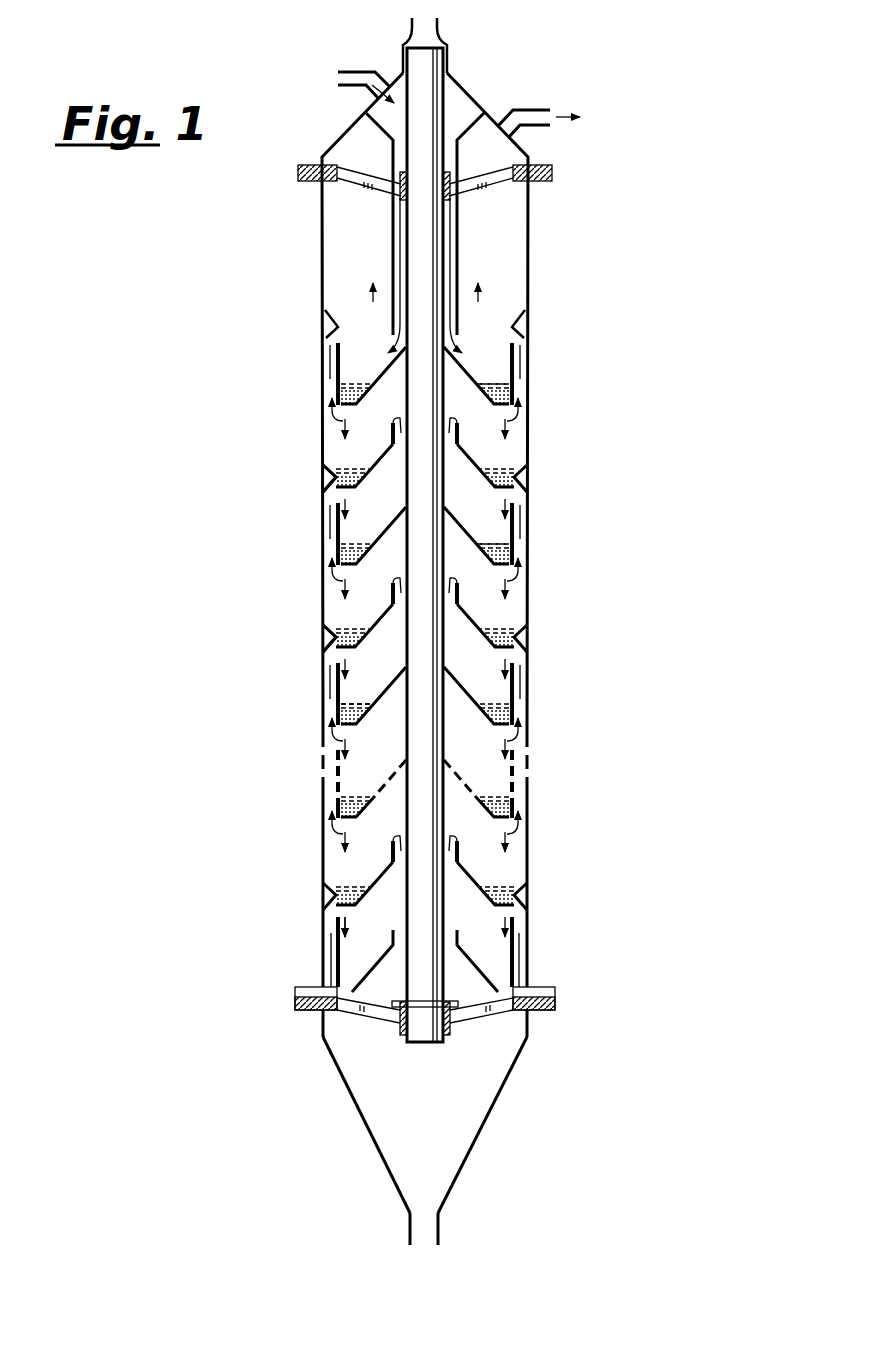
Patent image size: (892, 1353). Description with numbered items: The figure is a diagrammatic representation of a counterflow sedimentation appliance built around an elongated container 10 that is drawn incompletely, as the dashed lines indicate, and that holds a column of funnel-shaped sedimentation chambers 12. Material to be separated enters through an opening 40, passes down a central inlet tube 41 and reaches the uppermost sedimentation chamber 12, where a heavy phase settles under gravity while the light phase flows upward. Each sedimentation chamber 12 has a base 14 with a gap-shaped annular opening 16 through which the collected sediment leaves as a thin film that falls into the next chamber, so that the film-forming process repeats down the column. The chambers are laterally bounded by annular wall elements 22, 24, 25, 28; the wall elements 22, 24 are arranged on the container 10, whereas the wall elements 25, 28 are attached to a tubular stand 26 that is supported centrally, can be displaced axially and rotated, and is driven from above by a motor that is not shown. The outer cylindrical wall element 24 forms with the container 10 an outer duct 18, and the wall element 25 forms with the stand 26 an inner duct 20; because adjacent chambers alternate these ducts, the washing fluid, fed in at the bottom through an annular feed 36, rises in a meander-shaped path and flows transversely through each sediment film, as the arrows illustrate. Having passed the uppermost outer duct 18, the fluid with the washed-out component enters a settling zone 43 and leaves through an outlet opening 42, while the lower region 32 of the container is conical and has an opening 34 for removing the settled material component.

The elongated container 10 is at (627, 317).
The sedimentation chamber 12 is at (340, 463).
The base 14 is at (340, 636).
The annular opening 16 is at (508, 640).
The outer duct 18 is at (361, 381).
The inner duct 20 is at (392, 862).
The annular wall element 22 is at (327, 480).
The cylindrical wall element 24 is at (514, 372).
The annular wall element 25 is at (478, 463).
The stand 26 is at (430, 495).
The annular wall element 28 is at (476, 381).
The lower region 32 is at (482, 1130).
The opening 34 is at (422, 1240).
The annular feed 36 is at (297, 1013).
The opening 40 is at (337, 78).
The central inlet tube 41 is at (460, 236).
The outlet opening 42 is at (537, 112).
The settling zone 43 is at (338, 240).